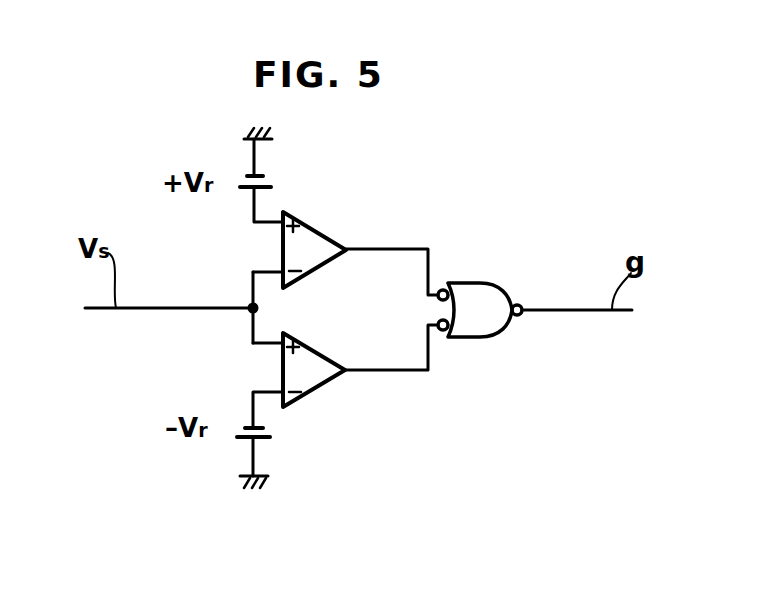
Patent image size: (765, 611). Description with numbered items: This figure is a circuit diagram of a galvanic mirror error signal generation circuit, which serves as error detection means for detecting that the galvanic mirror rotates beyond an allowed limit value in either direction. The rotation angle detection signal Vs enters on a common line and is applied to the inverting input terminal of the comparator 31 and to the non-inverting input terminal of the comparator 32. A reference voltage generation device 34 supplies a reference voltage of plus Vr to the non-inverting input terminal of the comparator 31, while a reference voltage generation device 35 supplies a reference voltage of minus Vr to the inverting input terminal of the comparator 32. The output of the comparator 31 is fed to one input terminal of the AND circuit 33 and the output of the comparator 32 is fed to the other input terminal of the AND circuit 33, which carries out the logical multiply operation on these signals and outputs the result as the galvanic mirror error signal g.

The comparator 31 is at (322, 230).
The comparator 32 is at (330, 381).
The AND circuit 33 is at (495, 283).
The reference voltage generation device 34 is at (268, 183).
The reference voltage generation device 35 is at (268, 431).